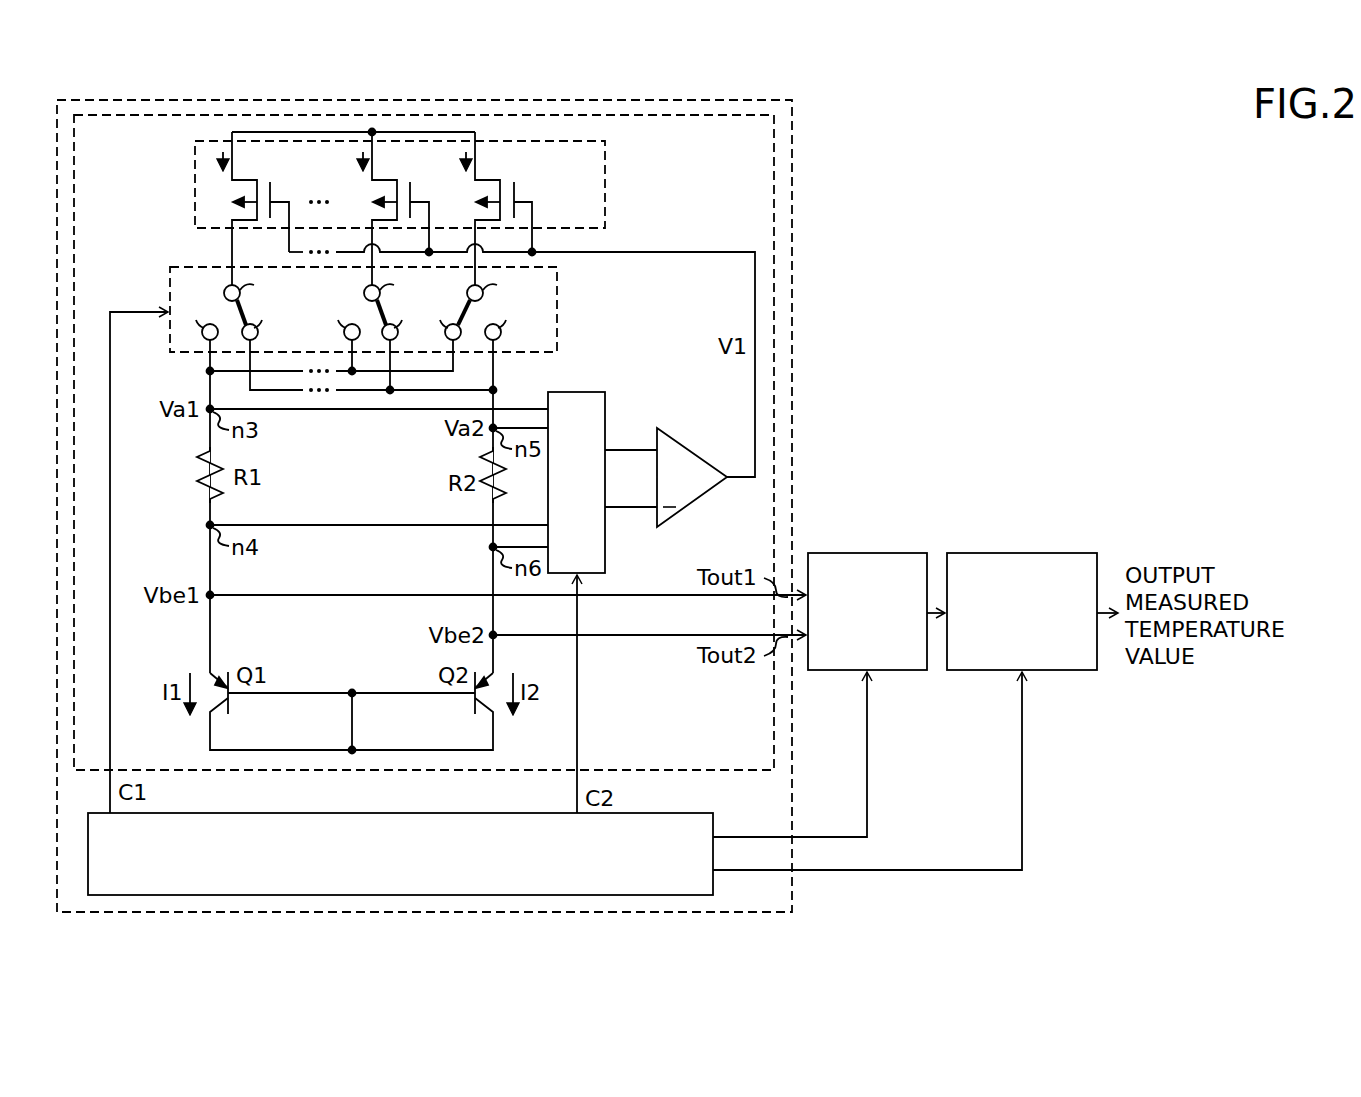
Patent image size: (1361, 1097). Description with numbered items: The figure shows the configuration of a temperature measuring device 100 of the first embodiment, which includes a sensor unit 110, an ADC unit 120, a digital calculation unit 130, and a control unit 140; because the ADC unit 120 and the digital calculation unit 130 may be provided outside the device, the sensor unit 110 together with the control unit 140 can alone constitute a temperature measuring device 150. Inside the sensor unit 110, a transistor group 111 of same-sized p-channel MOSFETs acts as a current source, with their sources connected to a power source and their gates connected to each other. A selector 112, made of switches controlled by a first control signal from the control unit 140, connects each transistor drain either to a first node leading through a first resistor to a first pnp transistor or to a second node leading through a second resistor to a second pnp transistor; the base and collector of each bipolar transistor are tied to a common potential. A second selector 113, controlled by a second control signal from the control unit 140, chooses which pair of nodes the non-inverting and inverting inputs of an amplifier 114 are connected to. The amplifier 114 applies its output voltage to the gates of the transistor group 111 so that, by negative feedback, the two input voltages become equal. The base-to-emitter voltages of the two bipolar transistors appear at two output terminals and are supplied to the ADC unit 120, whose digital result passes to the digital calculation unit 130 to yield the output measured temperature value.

The temperature measuring device 100 is at (1107, 129).
The sensor unit 110 is at (775, 158).
The transistor group 111 is at (605, 185).
The selector 112 is at (557, 312).
The selector 113 is at (578, 392).
The amplifier 114 is at (694, 442).
The ADC unit 120 is at (862, 553).
The digital calculation unit 130 is at (1020, 553).
The control unit 140 is at (658, 813).
The temperature measuring device 150 is at (793, 118).